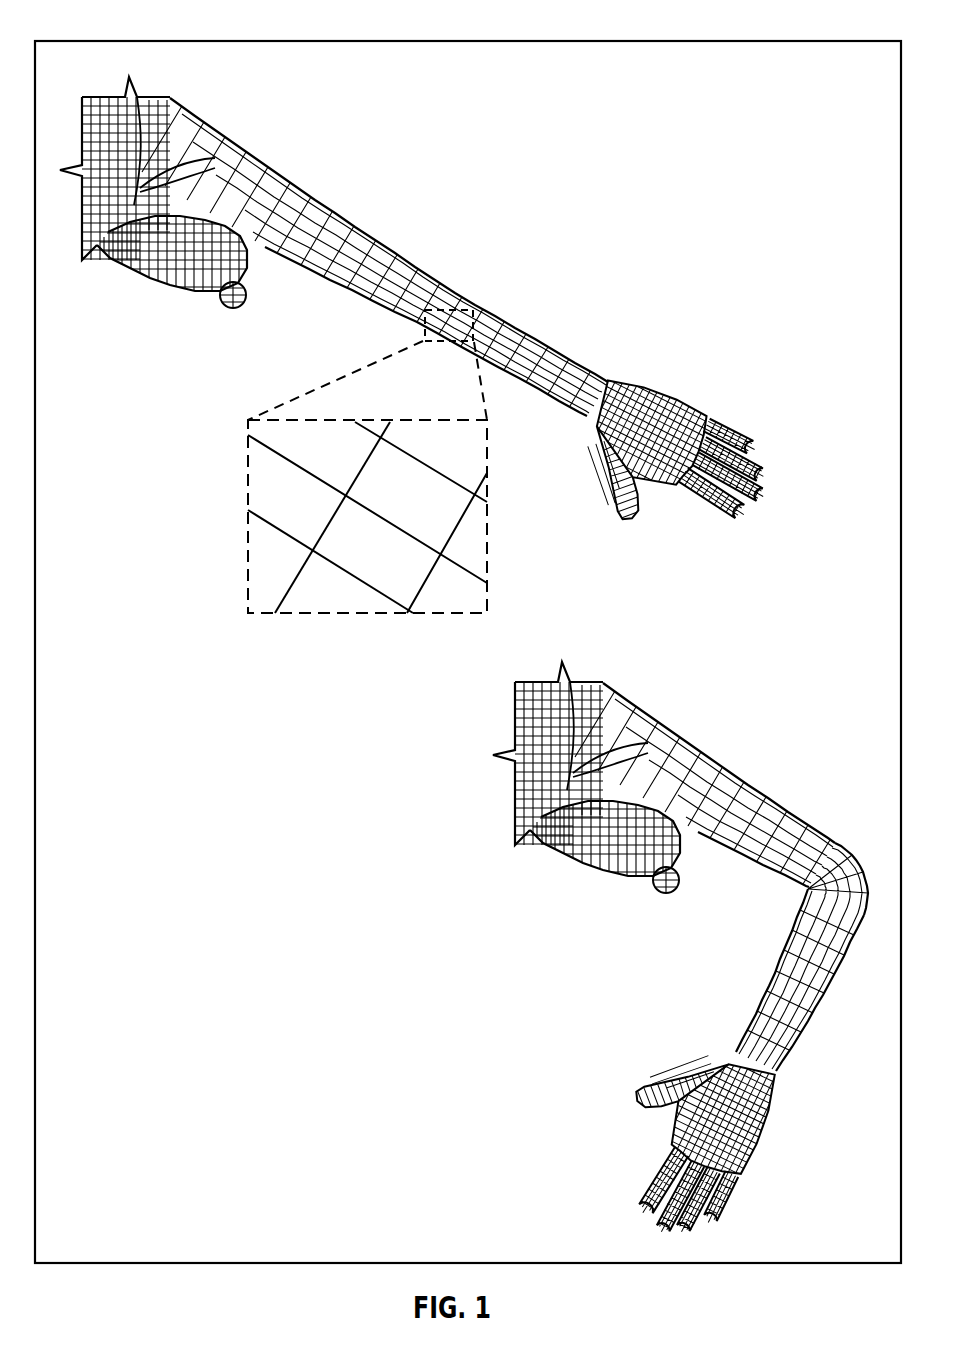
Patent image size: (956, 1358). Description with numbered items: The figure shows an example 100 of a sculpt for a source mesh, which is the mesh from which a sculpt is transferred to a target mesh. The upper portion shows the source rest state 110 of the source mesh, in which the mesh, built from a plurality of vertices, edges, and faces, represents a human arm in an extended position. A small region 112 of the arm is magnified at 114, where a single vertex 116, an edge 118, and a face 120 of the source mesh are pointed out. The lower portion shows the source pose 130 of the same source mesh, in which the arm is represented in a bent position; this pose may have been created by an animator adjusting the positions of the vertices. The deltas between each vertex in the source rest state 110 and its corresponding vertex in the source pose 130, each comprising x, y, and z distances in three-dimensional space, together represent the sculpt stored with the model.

The example 100 is at (125, 40).
The source rest state 110 is at (433, 262).
The region 112 is at (450, 312).
The magnified view 114 is at (278, 420).
The vertex 116 is at (310, 552).
The edge 118 is at (345, 570).
The face 120 is at (394, 570).
The source pose 130 is at (768, 792).